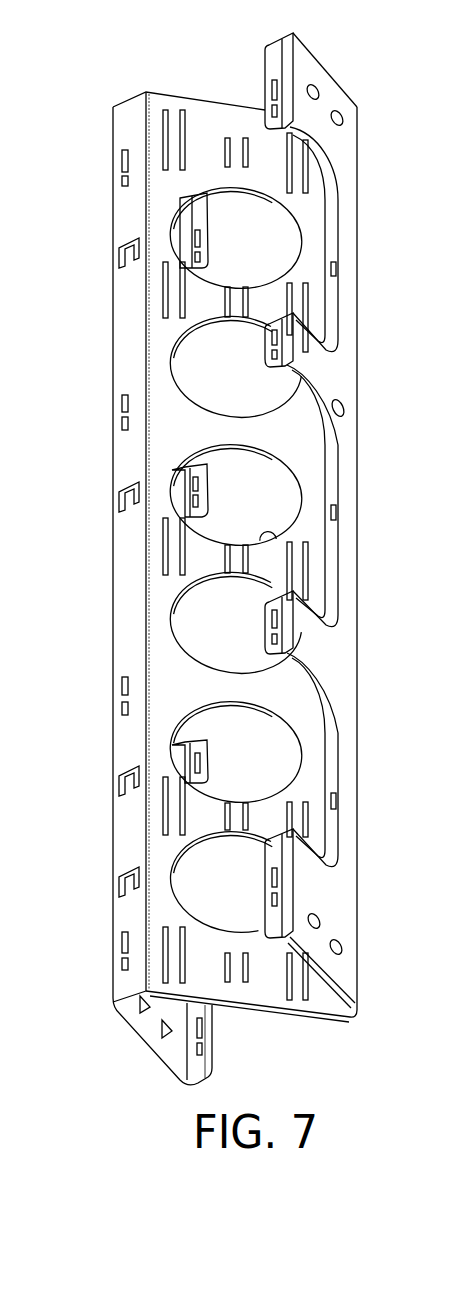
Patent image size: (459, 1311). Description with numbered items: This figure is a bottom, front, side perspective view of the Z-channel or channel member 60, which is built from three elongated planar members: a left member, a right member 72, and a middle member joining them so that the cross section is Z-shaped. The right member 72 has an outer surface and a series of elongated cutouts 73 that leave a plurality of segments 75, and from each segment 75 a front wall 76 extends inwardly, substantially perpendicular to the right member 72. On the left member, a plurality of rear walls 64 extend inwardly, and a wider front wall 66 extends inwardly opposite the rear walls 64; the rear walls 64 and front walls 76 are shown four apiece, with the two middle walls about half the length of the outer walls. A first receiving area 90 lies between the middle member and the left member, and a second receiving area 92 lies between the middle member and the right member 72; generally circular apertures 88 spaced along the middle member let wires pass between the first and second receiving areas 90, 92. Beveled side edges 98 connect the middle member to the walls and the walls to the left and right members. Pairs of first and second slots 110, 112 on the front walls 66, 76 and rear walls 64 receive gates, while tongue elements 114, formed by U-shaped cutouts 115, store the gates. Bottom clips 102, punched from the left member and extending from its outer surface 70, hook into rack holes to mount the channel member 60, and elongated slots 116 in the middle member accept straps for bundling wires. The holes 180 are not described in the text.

The channel member 60 is at (98, 98).
The second receiving area 92 is at (207, 125).
The front wall 66 is at (128, 620).
The front walls 76 is at (265, 67).
The hole 180 is at (340, 112).
The segments 75 is at (318, 144).
The elongated cutouts 73 is at (340, 205).
The right member 72 is at (348, 270).
The outer surface 70 is at (345, 340).
The rear walls 64 is at (200, 220).
The first slots 110 is at (202, 233).
The second slots 112 is at (202, 259).
The apertures 88 is at (282, 530).
The beveled side edges 98 is at (288, 609).
The U-shaped cutouts 115 is at (126, 773).
The tongue elements 114 is at (124, 788).
The bottom clips 102 is at (140, 1008).
The first receiving area 90 is at (152, 1015).
The elongated slots 116 is at (297, 1008).